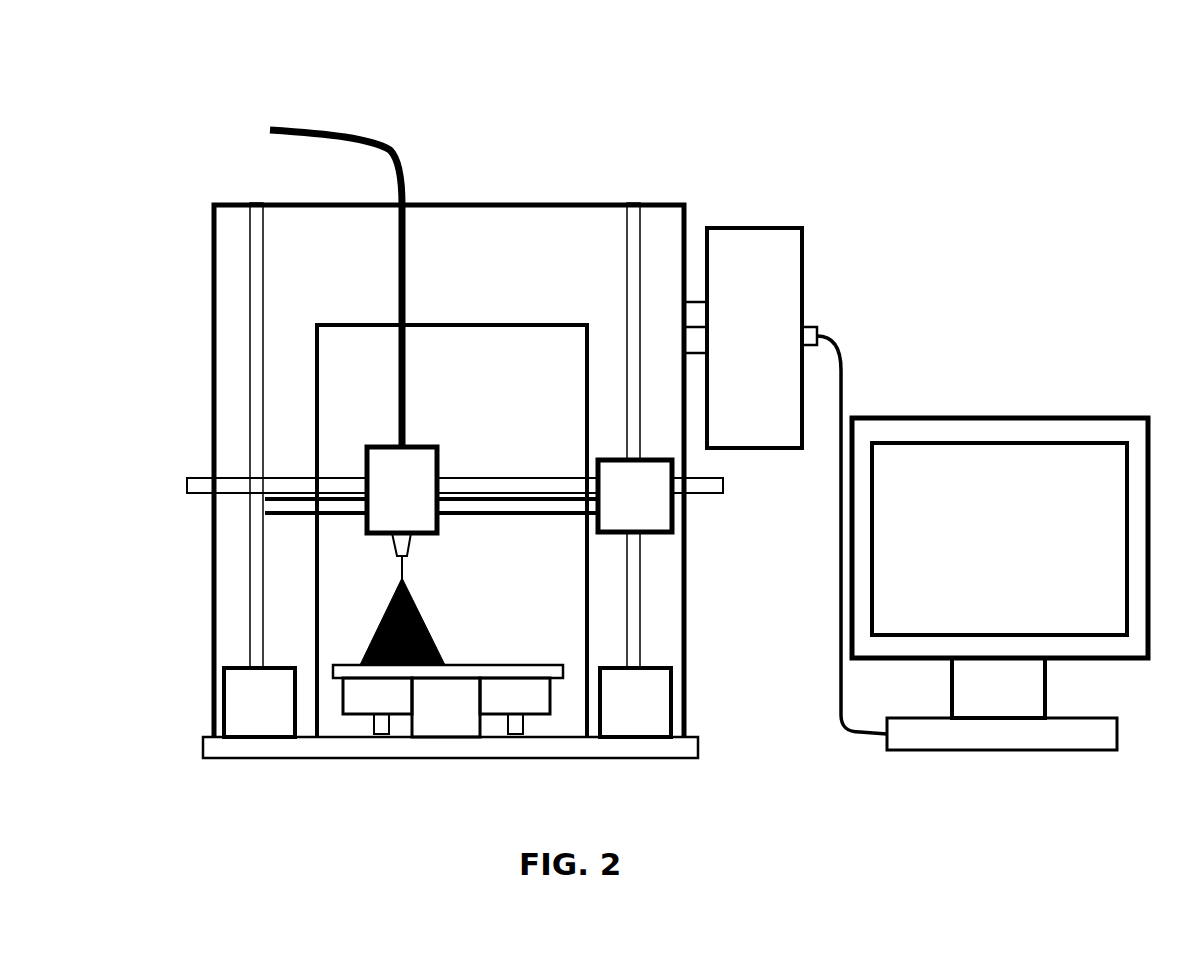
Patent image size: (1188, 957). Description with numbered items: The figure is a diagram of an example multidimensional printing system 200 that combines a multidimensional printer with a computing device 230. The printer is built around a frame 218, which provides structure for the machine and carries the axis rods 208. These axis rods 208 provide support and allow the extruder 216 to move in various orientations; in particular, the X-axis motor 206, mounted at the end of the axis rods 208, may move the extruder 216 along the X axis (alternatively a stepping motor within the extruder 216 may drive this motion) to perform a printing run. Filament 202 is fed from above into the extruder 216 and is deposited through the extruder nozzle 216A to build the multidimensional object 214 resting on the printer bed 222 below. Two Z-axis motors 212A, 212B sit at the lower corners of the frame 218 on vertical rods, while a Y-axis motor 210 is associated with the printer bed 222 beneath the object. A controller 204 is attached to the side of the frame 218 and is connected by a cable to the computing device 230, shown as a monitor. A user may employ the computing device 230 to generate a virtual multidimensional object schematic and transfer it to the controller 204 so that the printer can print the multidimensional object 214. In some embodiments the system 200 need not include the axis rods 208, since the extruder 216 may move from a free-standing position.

The multidimensional printing system 200 is at (846, 122).
The filament 202 is at (408, 170).
The controller 204 is at (800, 228).
The X-axis motor 206 is at (674, 532).
The axis rods 208 is at (520, 478).
The Y-axis motor 210 is at (482, 713).
The Z-axis motor 212A is at (216, 667).
The Z-axis motor 212B is at (682, 672).
The multidimensional object 214 is at (428, 628).
The extruder 216 is at (437, 447).
The extruder nozzle 216A is at (413, 546).
The frame 218 is at (538, 203).
The printer bed 222 is at (499, 665).
The computing device 230 is at (1029, 418).